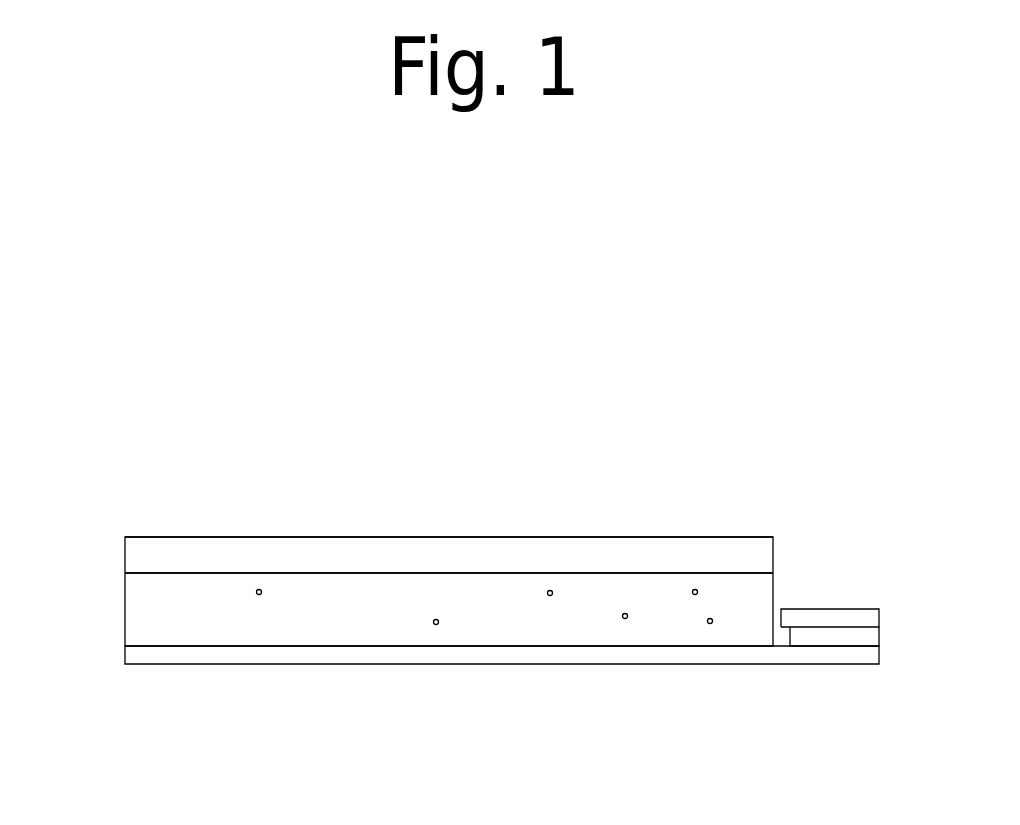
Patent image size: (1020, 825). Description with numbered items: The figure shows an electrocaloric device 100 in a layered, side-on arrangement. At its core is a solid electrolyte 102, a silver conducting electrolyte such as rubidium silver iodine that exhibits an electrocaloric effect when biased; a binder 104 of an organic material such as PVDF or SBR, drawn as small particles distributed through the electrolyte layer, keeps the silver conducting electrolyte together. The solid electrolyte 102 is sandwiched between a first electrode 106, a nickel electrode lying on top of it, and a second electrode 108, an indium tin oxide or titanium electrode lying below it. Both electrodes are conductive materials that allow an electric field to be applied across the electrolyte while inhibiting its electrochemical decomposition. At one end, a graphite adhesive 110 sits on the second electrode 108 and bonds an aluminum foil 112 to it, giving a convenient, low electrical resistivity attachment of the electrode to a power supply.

The electrocaloric device 100 is at (118, 169).
The solid electrolyte 102 is at (124, 623).
The binder 104 is at (712, 616).
The first electrode 106 is at (412, 536).
The second electrode 108 is at (405, 665).
The graphite adhesive 110 is at (843, 647).
The aluminum foil 112 is at (815, 606).